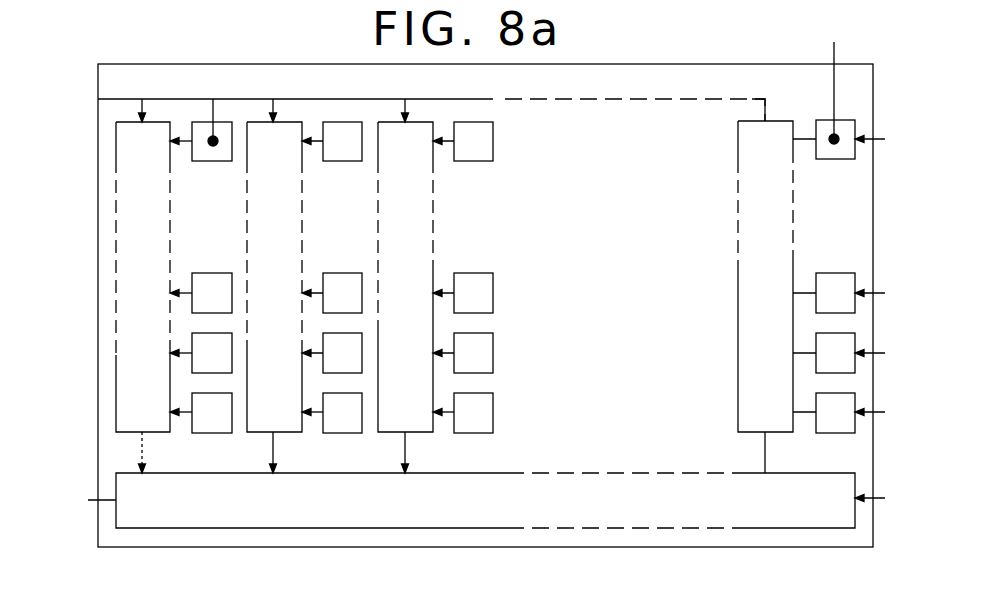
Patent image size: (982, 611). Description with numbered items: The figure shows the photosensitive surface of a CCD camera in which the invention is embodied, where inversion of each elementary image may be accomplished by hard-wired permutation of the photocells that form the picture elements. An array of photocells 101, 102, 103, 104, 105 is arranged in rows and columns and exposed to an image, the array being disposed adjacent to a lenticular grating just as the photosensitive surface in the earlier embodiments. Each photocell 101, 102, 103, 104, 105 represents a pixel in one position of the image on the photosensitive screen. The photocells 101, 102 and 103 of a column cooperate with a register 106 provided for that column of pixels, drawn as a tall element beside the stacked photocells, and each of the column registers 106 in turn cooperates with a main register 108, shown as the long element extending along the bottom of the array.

The photocell 101 is at (196, 273).
The photocell 102 is at (215, 330).
The photocell 103 is at (214, 393).
The photocell 104 is at (345, 394).
The photocell 105 is at (477, 393).
The register 106 is at (114, 358).
The main register 108 is at (247, 528).